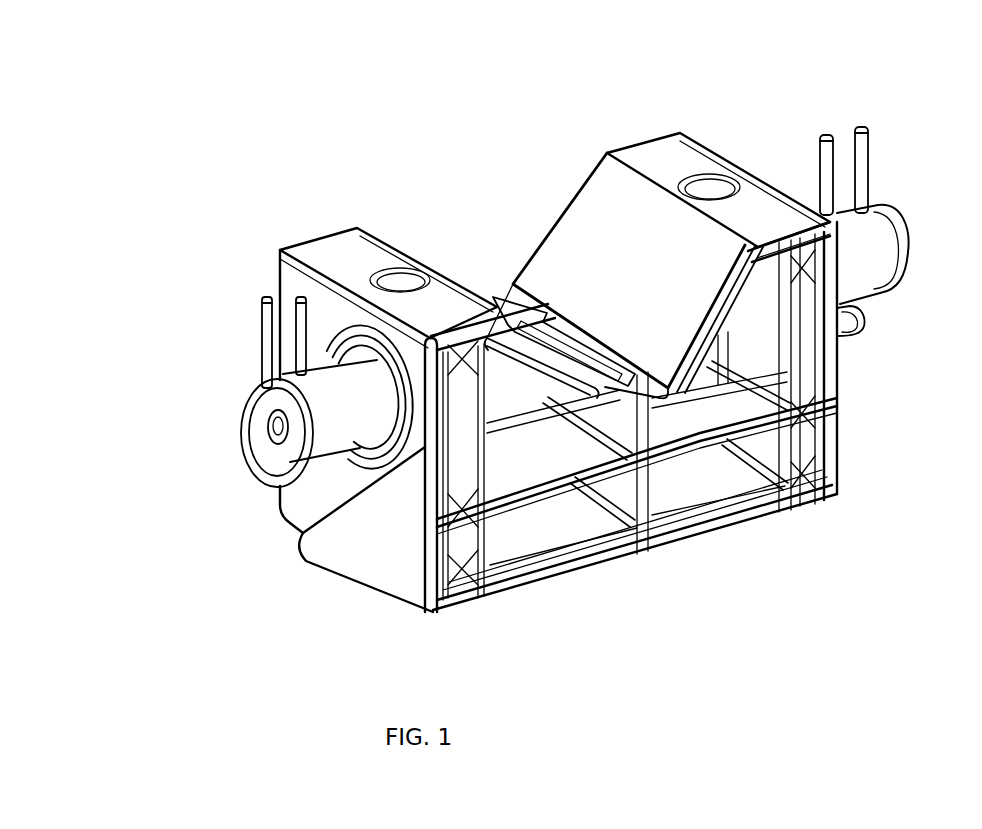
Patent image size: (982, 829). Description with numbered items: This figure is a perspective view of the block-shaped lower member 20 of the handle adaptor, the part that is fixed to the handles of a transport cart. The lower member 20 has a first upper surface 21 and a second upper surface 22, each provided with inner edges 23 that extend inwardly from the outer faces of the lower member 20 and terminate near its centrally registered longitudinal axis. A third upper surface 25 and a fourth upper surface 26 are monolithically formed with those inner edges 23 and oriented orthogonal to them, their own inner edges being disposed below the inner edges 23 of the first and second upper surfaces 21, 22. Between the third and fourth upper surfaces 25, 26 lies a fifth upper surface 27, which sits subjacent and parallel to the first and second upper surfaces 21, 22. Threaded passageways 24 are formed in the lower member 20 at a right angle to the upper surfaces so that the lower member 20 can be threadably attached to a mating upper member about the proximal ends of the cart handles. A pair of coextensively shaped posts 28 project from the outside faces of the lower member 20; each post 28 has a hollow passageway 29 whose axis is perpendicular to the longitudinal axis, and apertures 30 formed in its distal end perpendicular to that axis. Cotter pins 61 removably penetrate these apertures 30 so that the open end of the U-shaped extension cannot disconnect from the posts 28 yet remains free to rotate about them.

The lower member 20 is at (188, 98).
The first upper surface 21 is at (347, 244).
The second upper surface 22 is at (676, 157).
The inner edges 23 is at (603, 158).
The threaded passageways 24 is at (418, 280).
The third upper surface 25 is at (610, 205).
The fourth upper surface 26 is at (577, 375).
The fifth upper surface 27 is at (640, 372).
The posts 28 is at (323, 435).
The hollow passageway 29 is at (276, 430).
The apertures 30 is at (284, 387).
The cotter pins 61 is at (268, 337).